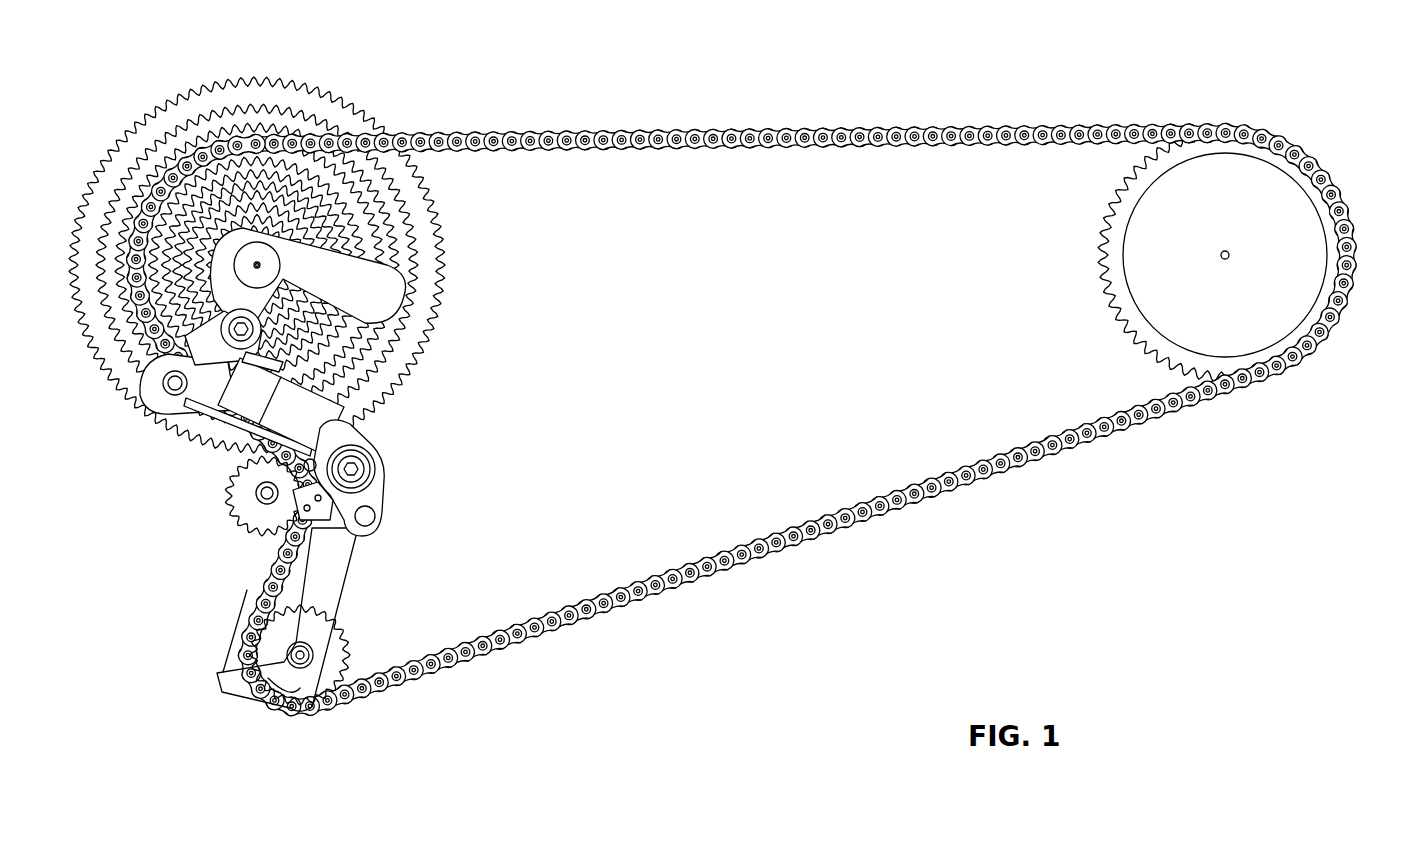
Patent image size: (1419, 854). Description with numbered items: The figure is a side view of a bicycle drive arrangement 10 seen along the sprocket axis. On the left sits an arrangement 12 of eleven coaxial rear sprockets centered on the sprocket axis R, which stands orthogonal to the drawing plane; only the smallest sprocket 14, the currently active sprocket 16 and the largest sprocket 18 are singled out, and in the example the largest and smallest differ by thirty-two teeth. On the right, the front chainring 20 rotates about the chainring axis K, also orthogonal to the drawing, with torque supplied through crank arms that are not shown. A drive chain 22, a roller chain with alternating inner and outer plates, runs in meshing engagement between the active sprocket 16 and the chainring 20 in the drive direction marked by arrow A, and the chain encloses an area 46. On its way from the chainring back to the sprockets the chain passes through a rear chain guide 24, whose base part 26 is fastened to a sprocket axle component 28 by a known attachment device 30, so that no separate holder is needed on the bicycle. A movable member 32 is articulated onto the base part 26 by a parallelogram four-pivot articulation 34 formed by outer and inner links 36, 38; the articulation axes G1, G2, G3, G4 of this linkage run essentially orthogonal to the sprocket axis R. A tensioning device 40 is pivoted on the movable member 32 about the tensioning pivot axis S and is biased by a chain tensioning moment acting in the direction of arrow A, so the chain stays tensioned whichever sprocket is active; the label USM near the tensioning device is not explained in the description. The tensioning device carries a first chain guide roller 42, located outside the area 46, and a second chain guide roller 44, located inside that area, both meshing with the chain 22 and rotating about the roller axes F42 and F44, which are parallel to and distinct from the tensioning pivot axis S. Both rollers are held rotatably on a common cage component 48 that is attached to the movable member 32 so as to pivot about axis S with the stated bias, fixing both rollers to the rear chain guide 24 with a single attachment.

The drive arrangement 10 is at (792, 646).
The arrangement of sprockets 12 is at (312, 246).
The smallest sprocket 14 is at (285, 278).
The active sprocket 16 is at (352, 193).
The largest sprocket 18 is at (432, 283).
The front chainring 20 is at (1211, 255).
The drive chain 22 is at (1027, 463).
The rear chain guide 24 is at (315, 478).
The base part 26 is at (230, 399).
The sprocket axle component 28 is at (240, 262).
The sprocket axis R is at (258, 262).
The attachment device 30 is at (298, 185).
The movable member 32 is at (350, 440).
The parallelogram four-pivot articulation 34 is at (365, 385).
The outer link 36 is at (315, 419).
The inner link 38 is at (370, 330).
The tensioning pivot axis S is at (353, 468).
The tensioning device 40 is at (270, 618).
The first chain guide roller 42 is at (263, 553).
The second chain guide roller 44 is at (330, 648).
The area enclosed by the drive chain 46 is at (743, 351).
The cage component 48 is at (325, 588).
The chain guide roller axis F42 is at (262, 498).
The chain guide roller axis F44 is at (318, 702).
The articulation axis G1 is at (233, 470).
The articulation axis G2 is at (217, 527).
The articulation axis G3 is at (225, 507).
The articulation axis G4 is at (232, 507).
The shifting mechanism USM is at (400, 520).
The chainring axis K is at (1229, 255).
The arrow A is at (800, 98).